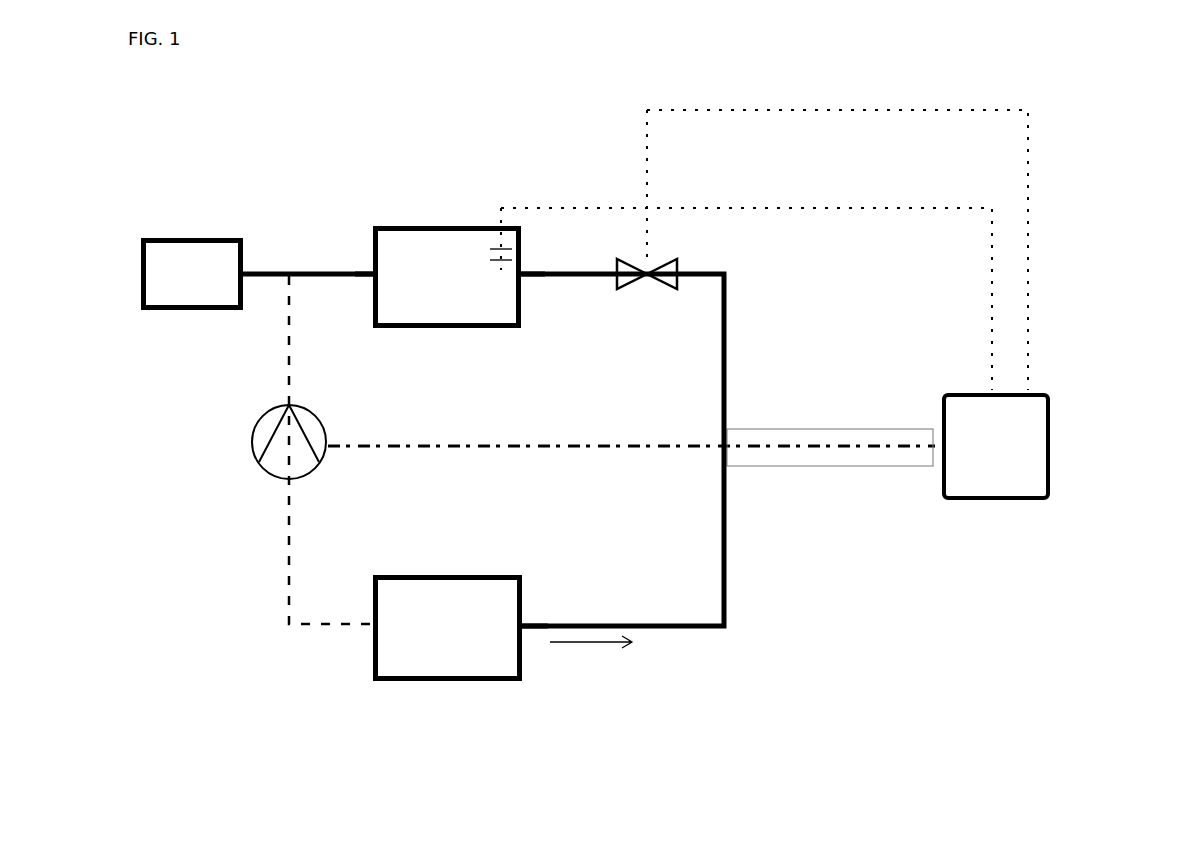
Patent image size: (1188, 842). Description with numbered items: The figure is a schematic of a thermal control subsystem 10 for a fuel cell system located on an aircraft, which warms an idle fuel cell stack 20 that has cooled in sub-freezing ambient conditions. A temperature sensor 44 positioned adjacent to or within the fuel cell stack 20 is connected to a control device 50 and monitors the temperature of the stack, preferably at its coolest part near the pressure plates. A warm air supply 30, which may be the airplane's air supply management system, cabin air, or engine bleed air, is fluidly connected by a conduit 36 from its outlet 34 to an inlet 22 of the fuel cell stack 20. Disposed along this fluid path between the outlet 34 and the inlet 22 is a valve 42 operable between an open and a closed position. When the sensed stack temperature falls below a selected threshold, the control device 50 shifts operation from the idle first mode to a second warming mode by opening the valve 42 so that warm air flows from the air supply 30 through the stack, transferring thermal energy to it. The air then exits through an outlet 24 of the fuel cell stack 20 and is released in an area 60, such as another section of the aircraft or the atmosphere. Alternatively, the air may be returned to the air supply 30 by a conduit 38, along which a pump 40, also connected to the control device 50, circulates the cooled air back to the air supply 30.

The thermal control subsystem 10 is at (876, 646).
The fuel cell stack 20 is at (394, 203).
The inlet 22 is at (538, 284).
The outlet 24 is at (360, 280).
The warm air supply 30 is at (452, 694).
The outlet of the air supply 34 is at (537, 613).
The conduit 36 is at (740, 601).
The conduit 38 is at (282, 643).
The pump 40 is at (258, 490).
The valve 42 is at (647, 225).
The temperature sensor 44 is at (482, 243).
The control device 50 is at (1058, 427).
The area 60 is at (259, 274).